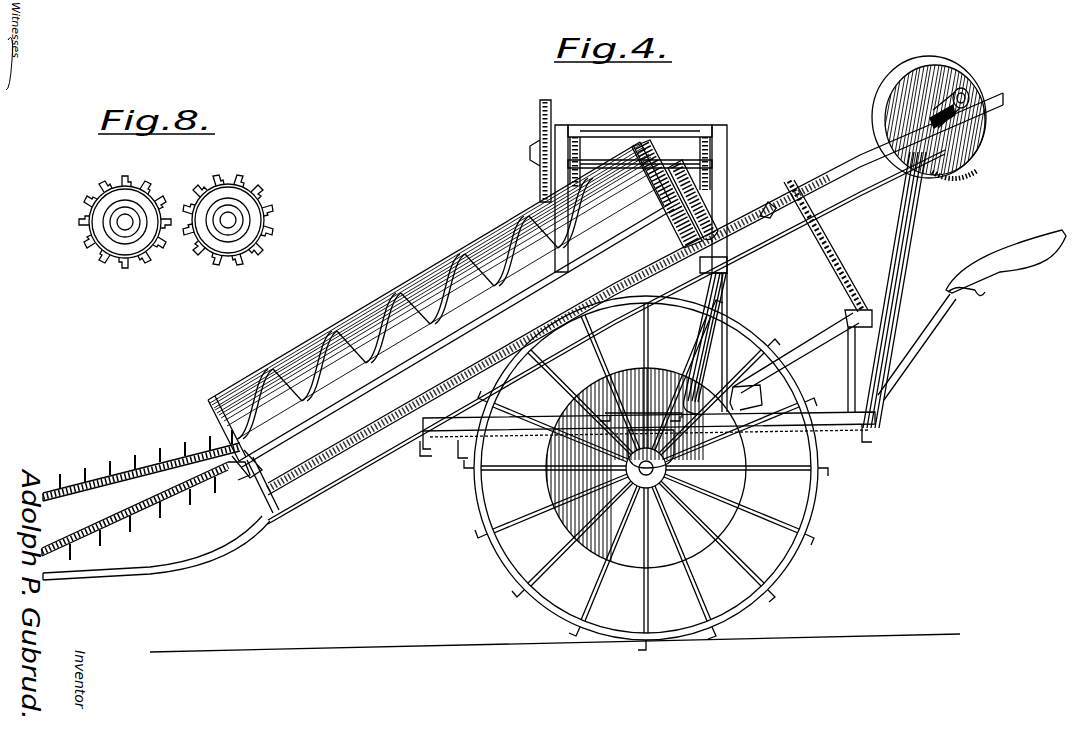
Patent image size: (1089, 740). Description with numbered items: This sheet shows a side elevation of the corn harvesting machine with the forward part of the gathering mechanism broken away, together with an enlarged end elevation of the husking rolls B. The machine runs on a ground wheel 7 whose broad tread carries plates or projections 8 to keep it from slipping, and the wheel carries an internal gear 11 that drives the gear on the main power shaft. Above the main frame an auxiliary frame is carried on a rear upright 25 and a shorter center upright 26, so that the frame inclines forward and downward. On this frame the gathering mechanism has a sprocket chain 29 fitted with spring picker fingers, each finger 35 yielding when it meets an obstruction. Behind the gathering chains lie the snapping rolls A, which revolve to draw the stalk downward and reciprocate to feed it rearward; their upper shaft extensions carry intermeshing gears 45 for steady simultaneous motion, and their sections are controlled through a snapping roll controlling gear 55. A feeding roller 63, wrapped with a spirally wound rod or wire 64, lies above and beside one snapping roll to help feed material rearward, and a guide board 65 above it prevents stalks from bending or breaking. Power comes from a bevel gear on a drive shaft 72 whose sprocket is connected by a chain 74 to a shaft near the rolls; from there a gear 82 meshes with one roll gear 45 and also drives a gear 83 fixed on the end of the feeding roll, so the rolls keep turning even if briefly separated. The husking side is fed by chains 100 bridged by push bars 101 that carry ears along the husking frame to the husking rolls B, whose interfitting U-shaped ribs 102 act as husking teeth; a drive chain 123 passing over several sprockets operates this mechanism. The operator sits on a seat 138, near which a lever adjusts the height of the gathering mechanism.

In FIG. 4, the ground wheel 7 is at (820, 494).
In FIG. 4, the plates or projections 8 is at (773, 592).
In FIG. 4, the internal gear 11 is at (723, 518).
In FIG. 4, the rear upright 25 is at (911, 235).
In FIG. 4, the center upright 26 is at (728, 298).
In FIG. 4, the sprocket chain 29 is at (143, 470).
In FIG. 4, the finger 35 is at (210, 480).
In FIG. 4, the intermeshing gear 45 is at (740, 237).
In FIG. 4, the snapping roll controlling gear 55 is at (972, 150).
In FIG. 4, the feeding roller 63 is at (258, 450).
In FIG. 4, the spirally wound rod or wire 64 is at (310, 418).
In FIG. 4, the guide board 65 is at (277, 360).
In FIG. 4, the drive shaft 72 is at (807, 347).
In FIG. 4, the chain 74 is at (837, 253).
In FIG. 4, the gear 82 is at (703, 210).
In FIG. 4, the gear 83 is at (712, 185).
In FIG. 4, the chain 100 is at (582, 130).
In FIG. 4, the push bar 101 is at (658, 160).
In FIG. 8, the U-shaped rib 102 is at (100, 188).
In FIG. 4, the drive chain 123 is at (546, 178).
In FIG. 4, the seat 138 is at (1010, 243).
In FIG. 4, the snapping rolls A is at (366, 456).
In FIG. 8, the husking rolls B is at (167, 166).